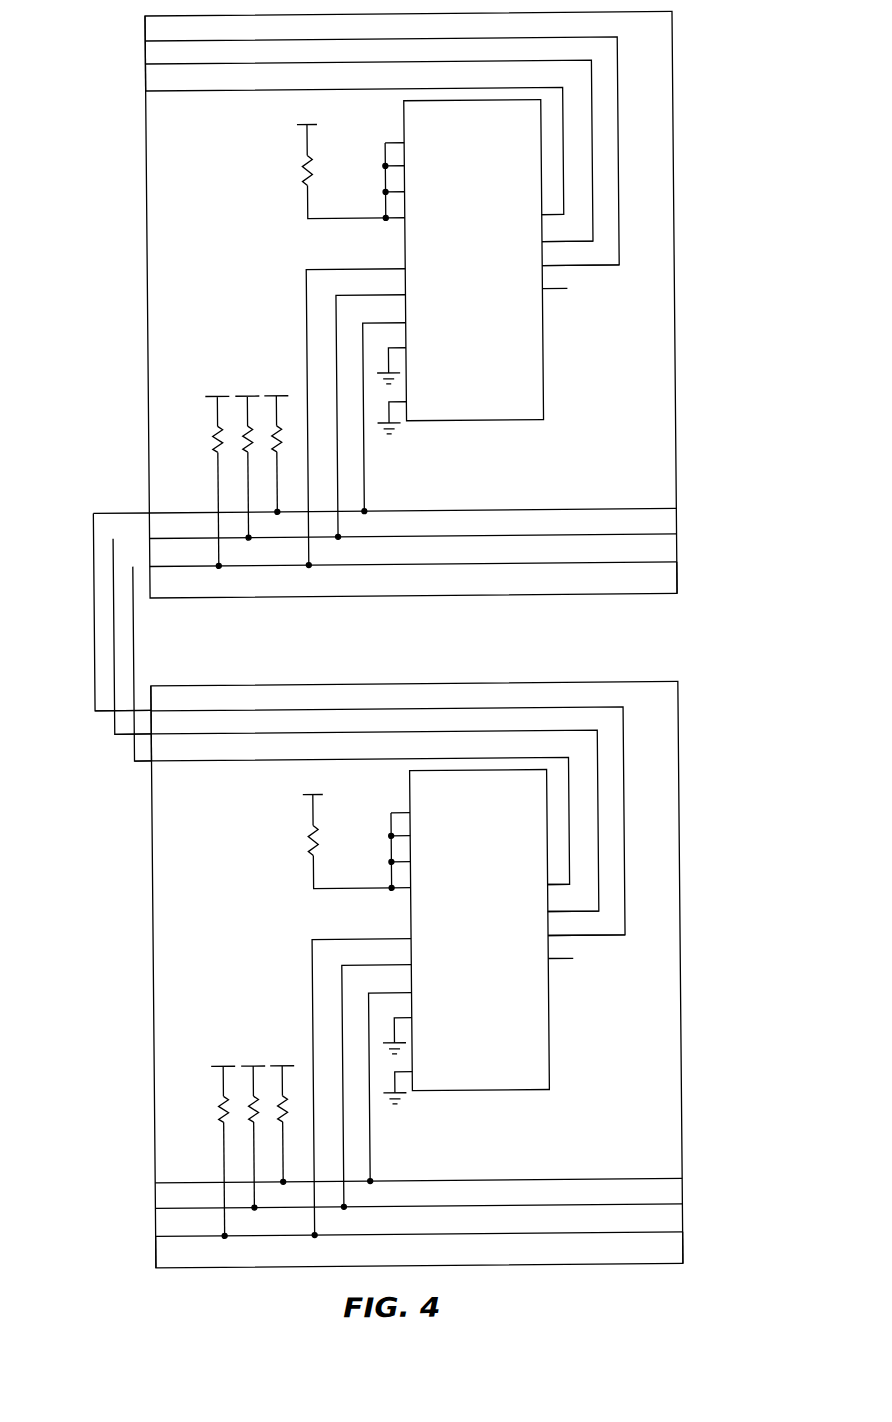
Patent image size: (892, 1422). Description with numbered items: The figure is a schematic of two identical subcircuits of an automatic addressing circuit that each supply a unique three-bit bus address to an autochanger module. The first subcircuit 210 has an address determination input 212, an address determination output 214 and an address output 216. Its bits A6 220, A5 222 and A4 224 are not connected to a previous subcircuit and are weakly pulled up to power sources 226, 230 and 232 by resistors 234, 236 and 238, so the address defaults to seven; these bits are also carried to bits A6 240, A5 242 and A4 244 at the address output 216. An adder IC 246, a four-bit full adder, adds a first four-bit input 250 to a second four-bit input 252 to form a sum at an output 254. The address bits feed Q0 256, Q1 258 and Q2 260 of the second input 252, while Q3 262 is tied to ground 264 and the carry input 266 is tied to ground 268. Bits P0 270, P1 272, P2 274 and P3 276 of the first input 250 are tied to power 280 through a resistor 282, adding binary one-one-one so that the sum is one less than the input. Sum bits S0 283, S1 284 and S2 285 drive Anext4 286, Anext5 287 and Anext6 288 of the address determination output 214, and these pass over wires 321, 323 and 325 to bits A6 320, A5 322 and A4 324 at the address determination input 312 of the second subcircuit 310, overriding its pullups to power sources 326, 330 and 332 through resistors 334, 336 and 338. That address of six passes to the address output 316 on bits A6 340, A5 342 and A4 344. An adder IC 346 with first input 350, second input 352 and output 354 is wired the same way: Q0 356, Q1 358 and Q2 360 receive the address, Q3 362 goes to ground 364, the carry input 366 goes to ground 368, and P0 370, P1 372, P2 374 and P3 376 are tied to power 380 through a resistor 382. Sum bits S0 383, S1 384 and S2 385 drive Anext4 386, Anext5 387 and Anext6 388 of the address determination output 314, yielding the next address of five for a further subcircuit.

The second subcircuit 310 is at (672, 64).
The address determination output 314 is at (124, 103).
The address determination input 312 is at (116, 492).
The address output 316 is at (691, 577).
The bit A6 320 is at (121, 514).
The bit A5 322 is at (129, 540).
The bit A4 324 is at (137, 568).
The wire 321 is at (88, 633).
The wire 323 is at (108, 655).
The wire 325 is at (128, 668).
The bit Anext6 388 is at (344, 37).
The bit Anext5 387 is at (344, 61).
The bit Anext4 386 is at (344, 87).
The bit S0 383 is at (547, 219).
The bit S1 384 is at (547, 246).
The bit S2 385 is at (547, 270).
The adder IC 346 is at (541, 398).
The first four-bit input 350 is at (459, 185).
The four-bit output 354 is at (491, 257).
The second four-bit input 352 is at (461, 325).
The bit P0 370 is at (386, 143).
The bit P1 372 is at (386, 167).
The bit P2 374 is at (386, 193).
The bit P3 376 is at (386, 219).
The power 380 is at (296, 125).
The resistor 382 is at (305, 168).
The bit Q0 356 is at (397, 270).
The bit Q1 358 is at (397, 296).
The bit Q2 360 is at (397, 324).
The bit Q3 362 is at (397, 349).
The ground 364 is at (374, 375).
The carry input 366 is at (397, 422).
The ground 368 is at (374, 425).
The power source 326 is at (204, 397).
The power source 330 is at (232, 397).
The power source 332 is at (261, 397).
The pullup resistor 334 is at (214, 457).
The pullup resistor 336 is at (244, 457).
The pullup resistor 338 is at (273, 457).
The bit A6 340 is at (672, 512).
The bit A5 342 is at (672, 538).
The bit A4 344 is at (672, 566).
The subcircuit 210 is at (672, 734).
The address determination output 214 is at (124, 773).
The address determination input 212 is at (124, 1250).
The address output 216 is at (693, 1248).
The bit A6 220 is at (145, 1183).
The bit A5 222 is at (145, 1208).
The bit A4 224 is at (145, 1236).
The bit Anext6 288 is at (388, 808).
The bit Anext5 287 is at (375, 808).
The bit Anext4 286 is at (395, 888).
The bit S0 283 is at (594, 928).
The bit S1 284 is at (594, 953).
The bit S2 285 is at (594, 977).
The adder IC 246 is at (511, 941).
The first four-bit input 250 is at (461, 848).
The output 254 is at (506, 921).
The second four-bit input 252 is at (462, 979).
The bit P0 270 is at (372, 792).
The bit P1 272 is at (372, 818).
The bit P2 274 is at (372, 843).
The bit P3 276 is at (372, 869).
The power 280 is at (322, 841).
The resistor 282 is at (325, 857).
The bit Q0 256 is at (339, 1065).
The bit Q1 258 is at (339, 1064).
The bit Q2 260 is at (339, 1065).
The bit Q3 262 is at (338, 1007).
The ground 264 is at (337, 1026).
The carry input 266 is at (429, 1094).
The ground 268 is at (338, 1066).
The power source 226 is at (200, 1087).
The power source 230 is at (223, 1070).
The power source 232 is at (260, 1070).
The resistor 234 is at (199, 1216).
The resistor 236 is at (239, 1216).
The resistor 238 is at (281, 1216).
The bit A6 240 is at (446, 1159).
The bit A5 242 is at (446, 1185).
The bit A4 244 is at (446, 1213).